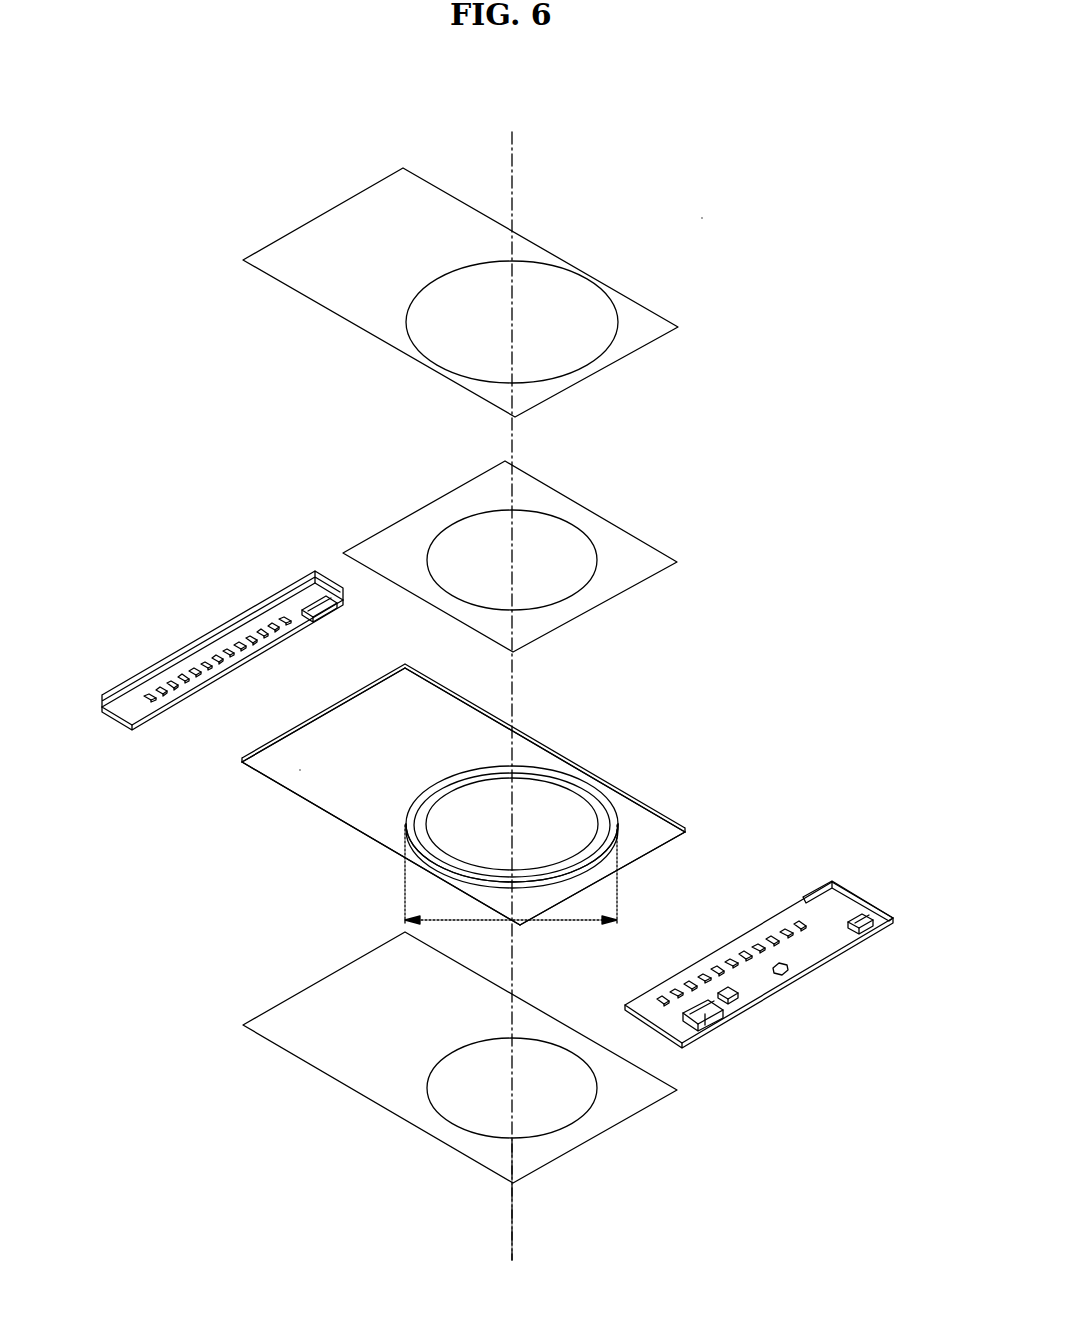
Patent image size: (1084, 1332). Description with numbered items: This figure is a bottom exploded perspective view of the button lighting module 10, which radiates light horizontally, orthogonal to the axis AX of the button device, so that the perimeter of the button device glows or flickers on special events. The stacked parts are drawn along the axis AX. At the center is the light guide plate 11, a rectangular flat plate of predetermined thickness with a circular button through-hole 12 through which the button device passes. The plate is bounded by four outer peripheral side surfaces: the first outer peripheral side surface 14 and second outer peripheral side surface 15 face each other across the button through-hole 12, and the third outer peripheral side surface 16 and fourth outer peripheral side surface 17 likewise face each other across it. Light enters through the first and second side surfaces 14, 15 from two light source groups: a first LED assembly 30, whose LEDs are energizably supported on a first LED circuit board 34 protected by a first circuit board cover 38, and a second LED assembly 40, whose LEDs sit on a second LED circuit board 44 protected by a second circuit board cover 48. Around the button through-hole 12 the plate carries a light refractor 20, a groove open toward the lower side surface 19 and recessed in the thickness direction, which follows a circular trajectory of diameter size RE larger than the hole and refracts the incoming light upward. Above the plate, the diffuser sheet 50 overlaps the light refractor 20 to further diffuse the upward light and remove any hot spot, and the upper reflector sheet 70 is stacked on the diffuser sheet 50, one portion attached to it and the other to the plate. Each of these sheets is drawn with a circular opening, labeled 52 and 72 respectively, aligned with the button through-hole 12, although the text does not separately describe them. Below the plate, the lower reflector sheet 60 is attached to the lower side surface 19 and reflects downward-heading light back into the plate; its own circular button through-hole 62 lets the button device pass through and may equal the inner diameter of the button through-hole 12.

The button lighting module 10 is at (703, 218).
The light guide plate 11 is at (598, 769).
The button through-hole 12 is at (553, 838).
The first outer peripheral side surface 14 is at (648, 858).
The second outer peripheral side surface 15 is at (300, 727).
The third outer peripheral side surface 16 is at (540, 745).
The fourth outer peripheral side surface 17 is at (313, 813).
The lower side surface 19 is at (300, 770).
The light refractor 20 is at (403, 857).
The first LED assembly 30 is at (764, 936).
The first LED circuit board 34 is at (812, 952).
The first circuit board cover 38 is at (838, 880).
The second LED assembly 40 is at (222, 654).
The second LED circuit board 44 is at (132, 714).
The second circuit board cover 48 is at (160, 674).
The diffuser sheet 50 is at (657, 530).
The diffuser opening 52 is at (556, 558).
The lower reflector sheet 60 is at (340, 1084).
The button through-hole 62 is at (565, 1087).
The upper reflector sheet 70 is at (295, 290).
The cover opening 72 is at (545, 321).
The axis AX is at (514, 1218).
The diameter size RE is at (511, 888).